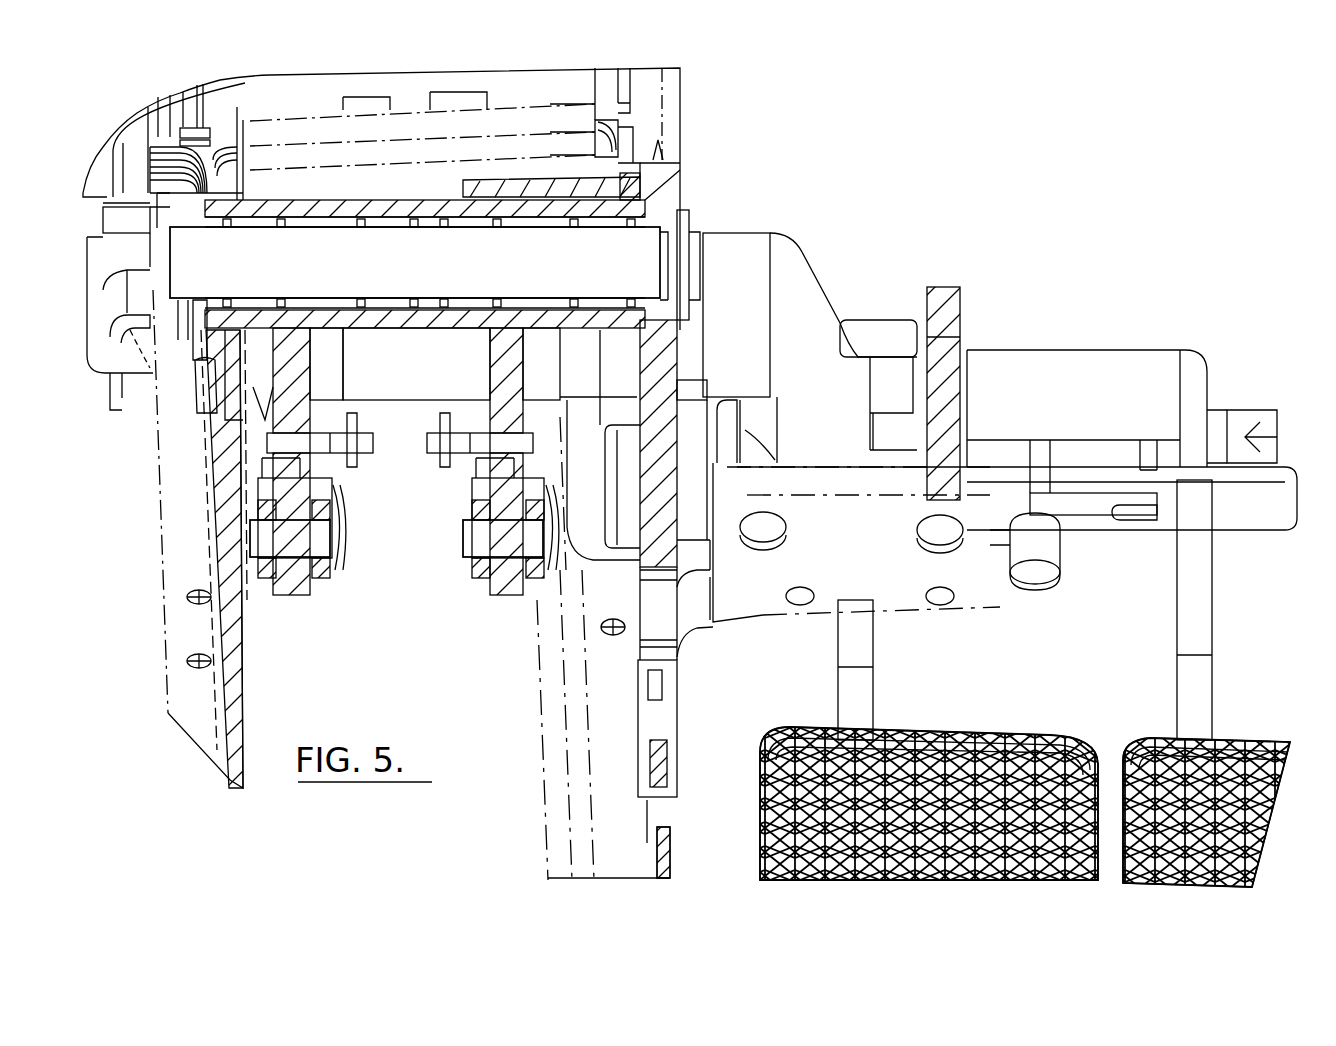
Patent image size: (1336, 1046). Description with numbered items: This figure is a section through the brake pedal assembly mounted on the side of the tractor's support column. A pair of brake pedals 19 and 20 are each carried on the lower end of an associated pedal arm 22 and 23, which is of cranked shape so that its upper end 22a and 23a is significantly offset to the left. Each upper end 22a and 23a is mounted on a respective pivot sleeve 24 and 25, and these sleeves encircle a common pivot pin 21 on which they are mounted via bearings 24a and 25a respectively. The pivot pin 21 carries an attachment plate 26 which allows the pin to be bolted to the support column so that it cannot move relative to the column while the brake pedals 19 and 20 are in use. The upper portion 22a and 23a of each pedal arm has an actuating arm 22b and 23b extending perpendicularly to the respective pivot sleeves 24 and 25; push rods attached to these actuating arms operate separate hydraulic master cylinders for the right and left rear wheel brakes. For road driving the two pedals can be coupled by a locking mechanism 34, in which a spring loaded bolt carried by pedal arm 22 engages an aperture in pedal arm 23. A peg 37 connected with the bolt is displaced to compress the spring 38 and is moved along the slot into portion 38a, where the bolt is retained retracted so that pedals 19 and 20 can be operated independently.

The brake pedal 19 is at (1262, 752).
The brake pedal 20 is at (985, 745).
The pivot pin 21 is at (620, 265).
The pedal arm 22 is at (1195, 688).
The upper end of pedal arm 22a is at (505, 370).
The actuating arm 22b is at (510, 575).
The pedal arm 23 is at (858, 640).
The upper end of pedal arm 23a is at (293, 355).
The actuating arm 23b is at (292, 575).
The pivot sleeve 24 is at (525, 212).
The bearing 24a is at (485, 212).
The pivot sleeve 25 is at (265, 208).
The bearing 25a is at (355, 215).
The attachment plate 26 is at (685, 218).
The locking mechanism 34 is at (1248, 518).
The peg 37 is at (1035, 575).
The spring 38 is at (1078, 497).
The portion of slot 38a is at (1142, 530).